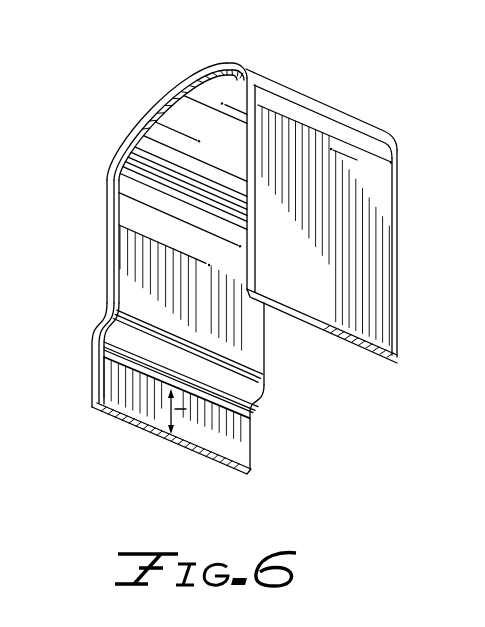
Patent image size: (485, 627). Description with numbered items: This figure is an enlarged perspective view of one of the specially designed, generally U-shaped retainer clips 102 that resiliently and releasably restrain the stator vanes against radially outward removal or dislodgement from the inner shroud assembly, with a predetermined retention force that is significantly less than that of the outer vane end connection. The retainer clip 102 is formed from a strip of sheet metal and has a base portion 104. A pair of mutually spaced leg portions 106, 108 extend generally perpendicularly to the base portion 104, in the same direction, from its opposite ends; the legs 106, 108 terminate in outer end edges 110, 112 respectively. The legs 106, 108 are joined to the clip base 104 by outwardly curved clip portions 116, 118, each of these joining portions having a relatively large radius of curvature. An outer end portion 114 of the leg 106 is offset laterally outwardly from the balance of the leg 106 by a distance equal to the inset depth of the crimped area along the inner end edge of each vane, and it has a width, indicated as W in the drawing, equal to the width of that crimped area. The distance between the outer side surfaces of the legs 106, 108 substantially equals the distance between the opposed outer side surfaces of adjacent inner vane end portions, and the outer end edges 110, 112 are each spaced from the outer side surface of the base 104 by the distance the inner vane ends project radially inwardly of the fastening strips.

The retainer clip 102 is at (155, 72).
The base portion 104 is at (192, 73).
The leg portion 106 is at (106, 233).
The leg portion 108 is at (386, 207).
The outer end edge 110 is at (190, 455).
The outer end edge 112 is at (317, 327).
The outer end portion 114 is at (92, 378).
The outwardly curved clip portion 116 is at (119, 147).
The outwardly curved clip portion 118 is at (249, 70).